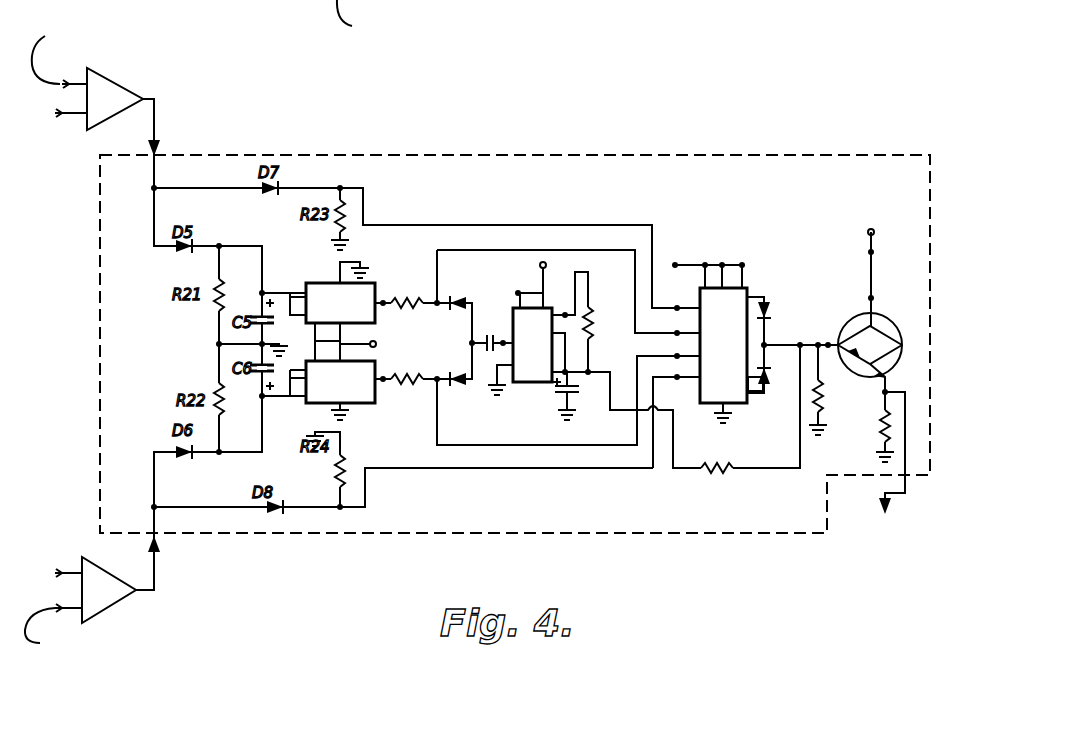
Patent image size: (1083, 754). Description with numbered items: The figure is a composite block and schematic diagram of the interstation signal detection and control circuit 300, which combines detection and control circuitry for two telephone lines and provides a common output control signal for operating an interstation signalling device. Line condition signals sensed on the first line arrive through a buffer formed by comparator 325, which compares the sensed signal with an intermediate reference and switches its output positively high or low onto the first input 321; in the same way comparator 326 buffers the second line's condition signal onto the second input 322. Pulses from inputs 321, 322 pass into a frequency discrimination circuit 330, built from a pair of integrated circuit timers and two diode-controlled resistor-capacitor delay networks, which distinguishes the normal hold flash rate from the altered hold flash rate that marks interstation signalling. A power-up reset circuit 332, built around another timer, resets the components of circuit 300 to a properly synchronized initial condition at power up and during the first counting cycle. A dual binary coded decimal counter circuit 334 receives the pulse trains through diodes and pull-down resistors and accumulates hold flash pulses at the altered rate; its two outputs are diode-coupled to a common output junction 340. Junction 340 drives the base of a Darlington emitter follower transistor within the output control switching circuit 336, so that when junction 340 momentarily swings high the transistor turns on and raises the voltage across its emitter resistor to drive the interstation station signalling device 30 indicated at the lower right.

The interstation signal detection and control circuit 300 is at (572, 155).
The first input 321 is at (157, 133).
The second input 322 is at (157, 568).
The comparator circuit 325 is at (152, 82).
The comparator circuit 326 is at (130, 597).
The frequency discrimination circuit 330 is at (300, 258).
The power-up reset circuit 332 is at (526, 398).
The dual binary coded decimal counter circuit 334 is at (738, 258).
The output control switching circuit 336 is at (850, 258).
The common output junction 340 is at (812, 342).
The intermediate station signal device 30 is at (879, 559).